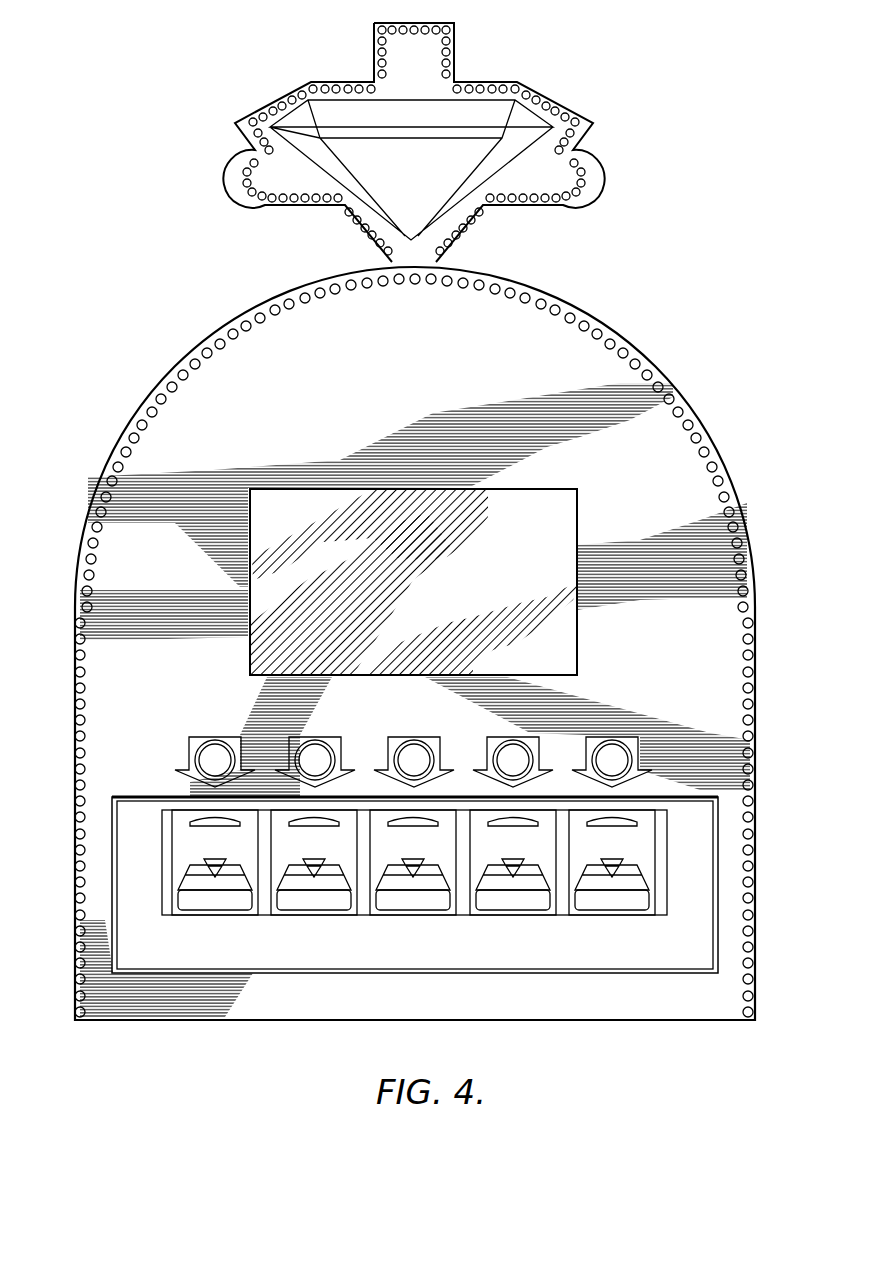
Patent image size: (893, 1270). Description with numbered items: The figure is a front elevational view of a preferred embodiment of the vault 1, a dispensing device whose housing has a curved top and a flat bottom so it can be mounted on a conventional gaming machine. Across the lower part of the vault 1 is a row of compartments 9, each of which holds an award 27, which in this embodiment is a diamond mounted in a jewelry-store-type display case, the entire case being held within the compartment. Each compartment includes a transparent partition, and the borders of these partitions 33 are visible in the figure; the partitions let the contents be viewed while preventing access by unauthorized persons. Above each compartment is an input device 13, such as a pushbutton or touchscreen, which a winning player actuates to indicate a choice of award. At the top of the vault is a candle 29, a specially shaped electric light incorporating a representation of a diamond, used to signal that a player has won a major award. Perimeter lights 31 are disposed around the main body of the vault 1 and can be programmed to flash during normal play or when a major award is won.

The vault 1 is at (682, 384).
The compartments 9 is at (642, 842).
The input device 13 is at (615, 760).
The award 27 is at (315, 858).
The candle 29 is at (487, 88).
The perimeter lights 31 is at (750, 544).
The partitions 33 is at (458, 845).